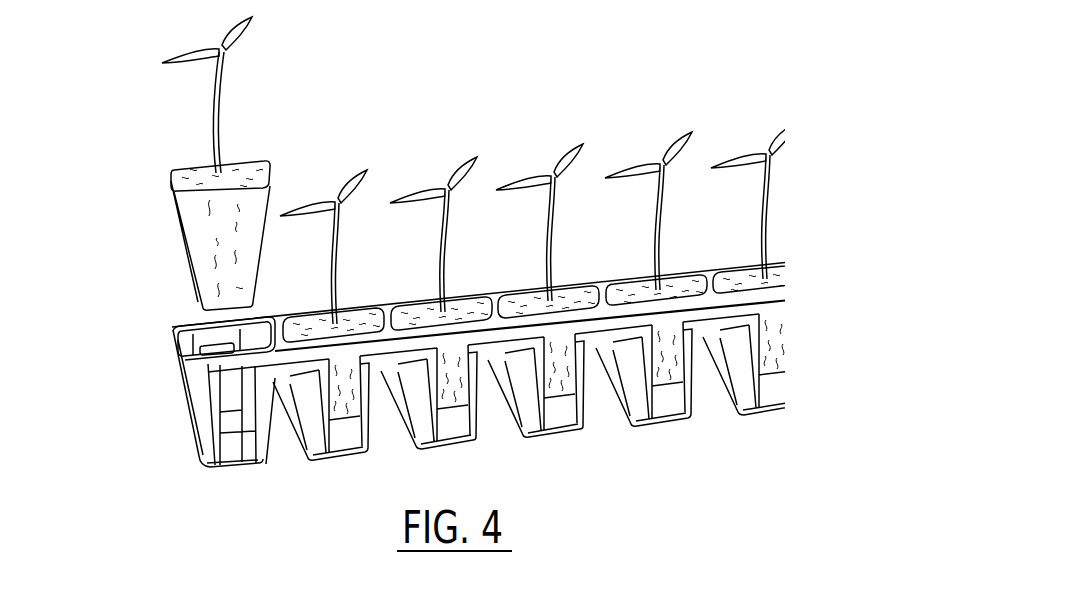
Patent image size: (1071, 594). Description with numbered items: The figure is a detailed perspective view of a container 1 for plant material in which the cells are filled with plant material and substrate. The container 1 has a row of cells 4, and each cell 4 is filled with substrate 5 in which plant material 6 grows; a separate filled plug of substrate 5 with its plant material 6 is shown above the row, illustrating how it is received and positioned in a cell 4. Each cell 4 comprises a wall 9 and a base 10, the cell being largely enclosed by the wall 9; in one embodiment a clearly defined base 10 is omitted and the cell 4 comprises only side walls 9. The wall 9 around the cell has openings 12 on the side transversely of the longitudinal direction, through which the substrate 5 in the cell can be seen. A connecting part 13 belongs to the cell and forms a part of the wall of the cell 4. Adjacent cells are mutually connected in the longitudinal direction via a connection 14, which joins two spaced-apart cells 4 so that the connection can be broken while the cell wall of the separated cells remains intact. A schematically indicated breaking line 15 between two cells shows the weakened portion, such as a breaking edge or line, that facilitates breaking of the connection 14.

The container 1 is at (493, 351).
The cell 4 is at (246, 163).
The substrate 5 is at (270, 193).
The plant material 6 is at (220, 90).
The wall 9 is at (237, 455).
The base 10 is at (238, 470).
The openings 12 is at (352, 421).
The connecting part 13 is at (343, 346).
The connection 14 is at (493, 266).
The breaking line 15 is at (500, 295).